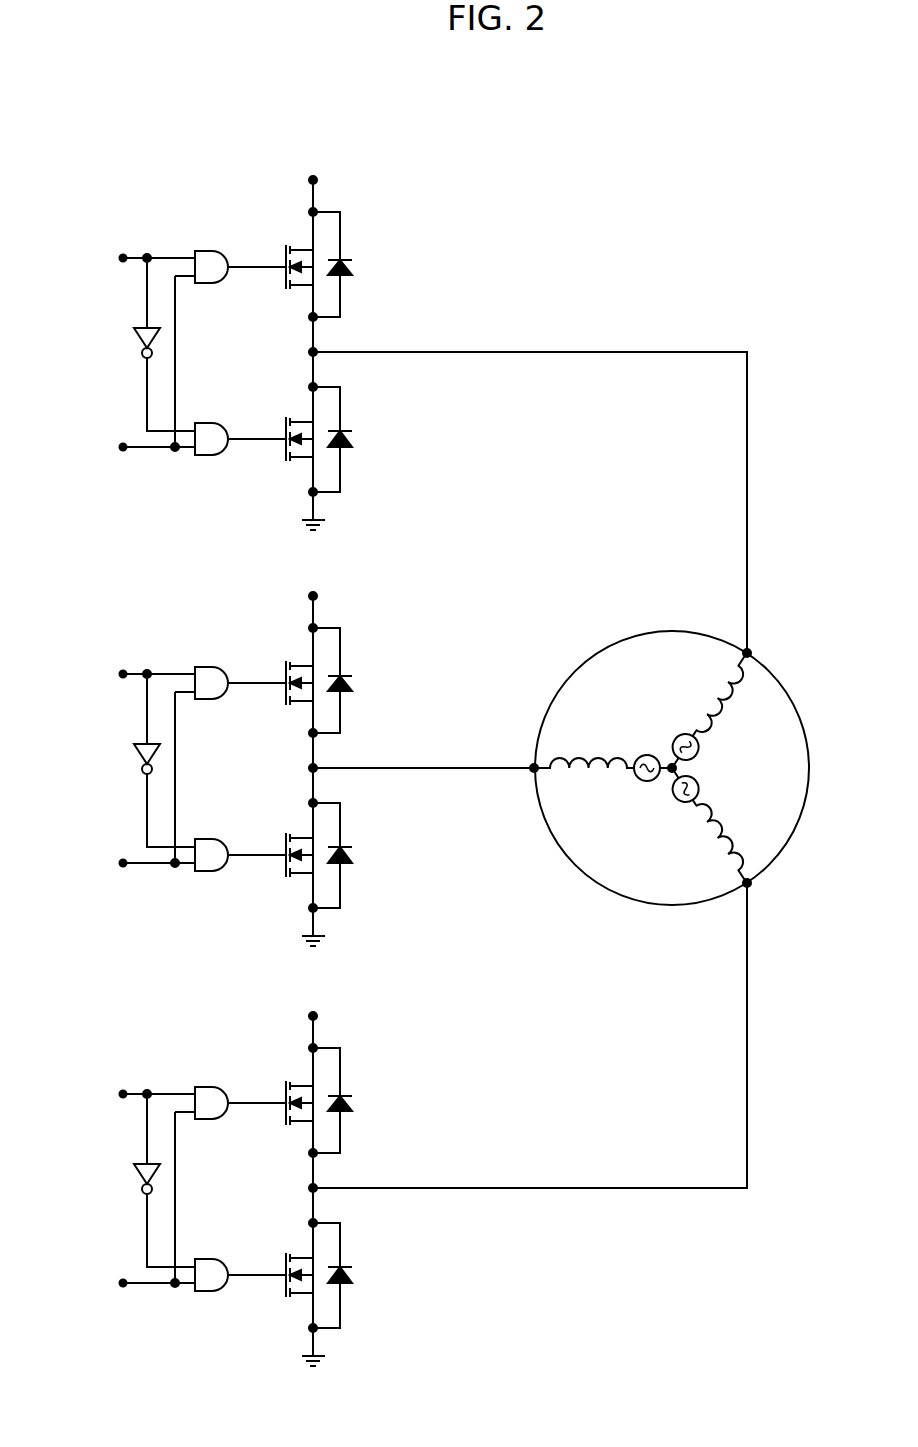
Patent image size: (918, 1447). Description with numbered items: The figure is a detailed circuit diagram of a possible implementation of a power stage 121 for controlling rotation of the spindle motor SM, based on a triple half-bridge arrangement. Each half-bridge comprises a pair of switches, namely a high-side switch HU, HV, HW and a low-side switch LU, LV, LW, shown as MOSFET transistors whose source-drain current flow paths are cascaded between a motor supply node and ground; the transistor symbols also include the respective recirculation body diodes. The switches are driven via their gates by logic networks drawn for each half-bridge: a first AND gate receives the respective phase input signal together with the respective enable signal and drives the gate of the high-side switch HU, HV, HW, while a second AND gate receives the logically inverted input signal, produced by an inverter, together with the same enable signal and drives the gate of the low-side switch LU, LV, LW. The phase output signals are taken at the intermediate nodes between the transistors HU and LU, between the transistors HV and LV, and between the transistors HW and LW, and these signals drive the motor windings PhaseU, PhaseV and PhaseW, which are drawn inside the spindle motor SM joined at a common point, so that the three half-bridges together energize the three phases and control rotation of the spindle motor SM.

The power stage 121 is at (413, 190).
The spindle motor SM is at (684, 752).
The high-side switch HU is at (302, 250).
The low-side switch LU is at (303, 458).
The high-side switch HV is at (287, 672).
The low-side switch LV is at (289, 862).
The high-side switch HW is at (287, 1092).
The low-side switch LW is at (289, 1282).
The phase U PhaseU is at (726, 710).
The phase V PhaseV is at (603, 754).
The phase W PhaseW is at (680, 826).